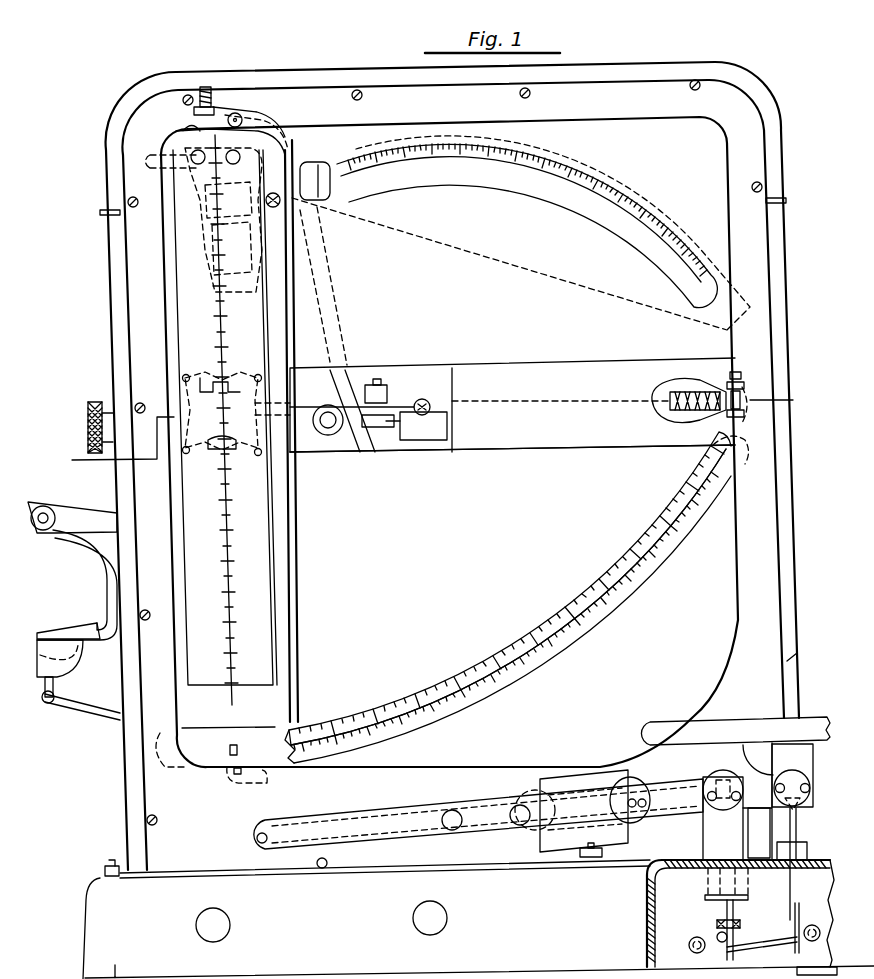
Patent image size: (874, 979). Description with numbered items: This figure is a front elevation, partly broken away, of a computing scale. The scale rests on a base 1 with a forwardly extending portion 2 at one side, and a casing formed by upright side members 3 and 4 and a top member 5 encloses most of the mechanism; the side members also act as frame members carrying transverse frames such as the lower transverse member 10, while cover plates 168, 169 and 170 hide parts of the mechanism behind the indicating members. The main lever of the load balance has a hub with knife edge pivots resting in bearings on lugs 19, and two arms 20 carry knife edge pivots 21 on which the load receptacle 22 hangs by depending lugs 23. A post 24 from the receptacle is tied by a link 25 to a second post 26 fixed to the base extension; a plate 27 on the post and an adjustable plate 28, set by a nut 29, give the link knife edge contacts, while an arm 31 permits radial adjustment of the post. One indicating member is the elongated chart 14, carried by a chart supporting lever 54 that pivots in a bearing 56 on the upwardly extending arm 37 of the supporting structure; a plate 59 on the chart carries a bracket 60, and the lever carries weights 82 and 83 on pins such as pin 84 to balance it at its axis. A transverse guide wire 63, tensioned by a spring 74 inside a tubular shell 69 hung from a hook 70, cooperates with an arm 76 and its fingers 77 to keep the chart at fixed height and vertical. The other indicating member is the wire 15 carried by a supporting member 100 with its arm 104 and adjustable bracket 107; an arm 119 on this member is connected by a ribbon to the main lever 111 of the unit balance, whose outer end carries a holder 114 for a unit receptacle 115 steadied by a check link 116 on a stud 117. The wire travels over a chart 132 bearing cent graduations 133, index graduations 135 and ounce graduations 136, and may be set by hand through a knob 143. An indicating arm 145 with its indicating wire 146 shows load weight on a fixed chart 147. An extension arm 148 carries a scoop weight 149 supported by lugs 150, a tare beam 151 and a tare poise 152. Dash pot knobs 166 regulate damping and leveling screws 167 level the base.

The base 1 is at (100, 917).
The forwardly extending portion 2 is at (648, 913).
The upright side member 3 is at (167, 120).
The upright side member 4 is at (435, 525).
The top member 5 is at (668, 71).
The lower transverse member 10 is at (760, 936).
The chart 14 is at (219, 347).
The wire 15 is at (235, 726).
The lugs 19 is at (723, 815).
The arms 20 is at (758, 801).
The knife edge pivots 21 is at (765, 833).
The load receptacle 22 is at (735, 731).
The lugs 23 is at (792, 777).
The post 24 is at (792, 884).
The link 25 is at (771, 945).
The second post 26 is at (735, 913).
The plate 27 is at (799, 914).
The plate 28 is at (720, 950).
The nut 29 is at (717, 924).
The arm 31 is at (705, 898).
The upwardly extending arm 37 is at (333, 452).
The chart supporting lever 54 is at (381, 433).
The bearing 56 is at (335, 428).
The plate 59 is at (234, 456).
The bracket 60 is at (222, 404).
The guide wire 63 is at (478, 400).
The tubular shell 69 is at (695, 390).
The hook 70 is at (741, 416).
The spring 74 is at (674, 411).
The arm 76 is at (303, 435).
The fingers 77 is at (370, 394).
The weight 82 is at (387, 393).
The weight 83 is at (423, 426).
The pin 84 is at (379, 382).
The supporting member 100 is at (227, 131).
The arm 104 is at (289, 366).
The bracket 107 is at (218, 110).
The main lever 111 is at (90, 512).
The holder 114 is at (97, 558).
The unit receptacle 115 is at (75, 636).
The check link 116 is at (95, 708).
The stud 117 is at (64, 682).
The arm 119 is at (152, 163).
The chart 132 is at (211, 758).
The graduations in cents 133 is at (402, 698).
The lower series of graduations 135 is at (463, 717).
The intermediate portion 136 is at (430, 712).
The knob 143 is at (91, 415).
The indicating arm 145 is at (340, 330).
The indicating wire 146 is at (320, 181).
The fixed chart 147 is at (496, 190).
The extension arm 148 is at (384, 843).
The scoop weight 149 is at (540, 835).
The lugs 150 is at (404, 840).
The tare beam 151 is at (478, 814).
The tare poise 152 is at (571, 813).
The actuating knob 166 is at (231, 925).
The leveling screws 167 is at (111, 857).
The cover plate 168 is at (512, 395).
The cover plate 169 is at (512, 435).
The cover plate 170 is at (512, 465).